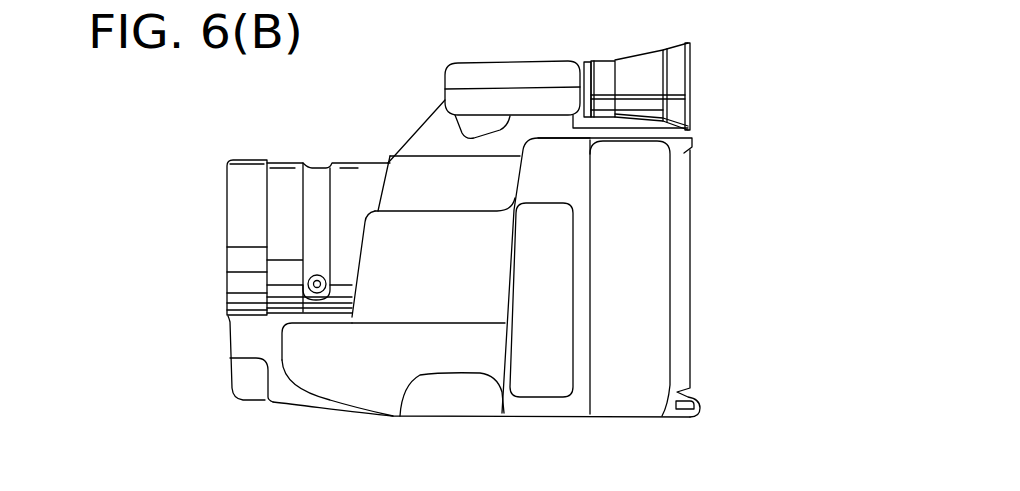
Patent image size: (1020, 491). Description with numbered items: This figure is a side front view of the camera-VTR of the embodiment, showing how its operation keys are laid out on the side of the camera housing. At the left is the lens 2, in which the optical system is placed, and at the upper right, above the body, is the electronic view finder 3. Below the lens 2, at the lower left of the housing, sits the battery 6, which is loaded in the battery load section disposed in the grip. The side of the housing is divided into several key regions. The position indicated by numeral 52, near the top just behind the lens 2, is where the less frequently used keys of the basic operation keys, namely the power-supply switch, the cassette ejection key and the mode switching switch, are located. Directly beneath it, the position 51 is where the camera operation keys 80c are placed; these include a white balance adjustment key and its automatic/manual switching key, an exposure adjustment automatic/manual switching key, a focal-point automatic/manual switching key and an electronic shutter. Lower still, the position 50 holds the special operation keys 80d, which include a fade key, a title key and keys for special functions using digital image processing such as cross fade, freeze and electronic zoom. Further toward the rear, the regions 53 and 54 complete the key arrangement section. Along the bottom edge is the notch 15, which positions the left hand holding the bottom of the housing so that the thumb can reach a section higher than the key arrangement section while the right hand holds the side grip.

The lens 2 is at (253, 163).
The electronic view finder 3 is at (690, 88).
The battery 6 is at (250, 388).
The notch 15 is at (465, 408).
The position of special operation keys 50 is at (372, 383).
The position of camera operation keys 51 is at (428, 267).
The position of less frequently used keys 52 is at (467, 198).
The key panel 53 is at (555, 301).
The key panel 54 is at (640, 293).
The camera operation keys 80c is at (385, 260).
The special operation keys 80d is at (307, 352).